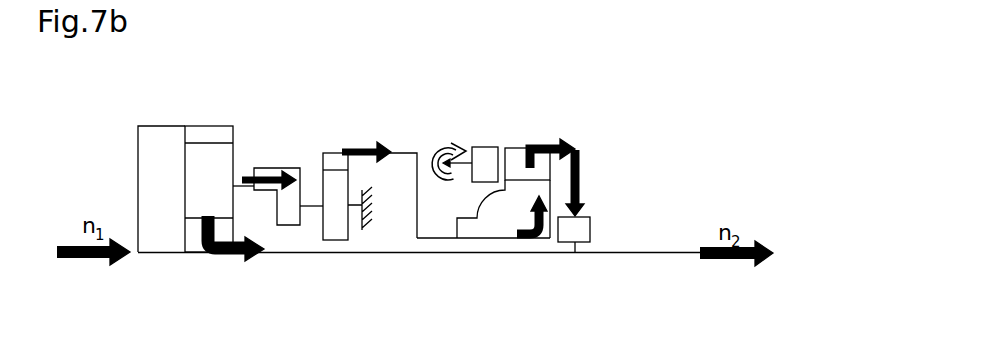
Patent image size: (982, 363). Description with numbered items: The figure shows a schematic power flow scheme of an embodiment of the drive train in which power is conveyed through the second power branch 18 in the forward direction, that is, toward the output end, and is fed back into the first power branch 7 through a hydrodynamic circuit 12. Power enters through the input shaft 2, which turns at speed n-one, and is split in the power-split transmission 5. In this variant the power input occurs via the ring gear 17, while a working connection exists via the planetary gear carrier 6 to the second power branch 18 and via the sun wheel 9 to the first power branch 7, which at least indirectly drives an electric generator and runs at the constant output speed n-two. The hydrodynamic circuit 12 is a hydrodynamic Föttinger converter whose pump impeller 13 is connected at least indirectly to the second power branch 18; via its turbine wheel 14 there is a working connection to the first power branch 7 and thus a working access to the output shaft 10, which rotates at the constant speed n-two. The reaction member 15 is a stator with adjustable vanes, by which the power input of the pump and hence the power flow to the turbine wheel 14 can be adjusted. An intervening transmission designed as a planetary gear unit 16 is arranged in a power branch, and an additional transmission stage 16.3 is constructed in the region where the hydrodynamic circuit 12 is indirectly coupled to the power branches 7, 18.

The input shaft 2 is at (128, 256).
The power-split transmission 5 is at (237, 335).
The planetary gear carrier 6 is at (218, 183).
The first power branch 7 is at (291, 256).
The sun wheel 9 is at (192, 256).
The output shaft 10 is at (707, 257).
The hydrodynamic circuit 12 is at (538, 128).
The pump impeller 13 is at (537, 244).
The turbine wheel 14 is at (548, 172).
The reaction member 15 is at (481, 147).
The planetary gear unit 16 is at (298, 154).
The additional transmission stage 16.3 is at (590, 228).
The ring gear 17 is at (202, 133).
The second power branch 18 is at (363, 146).